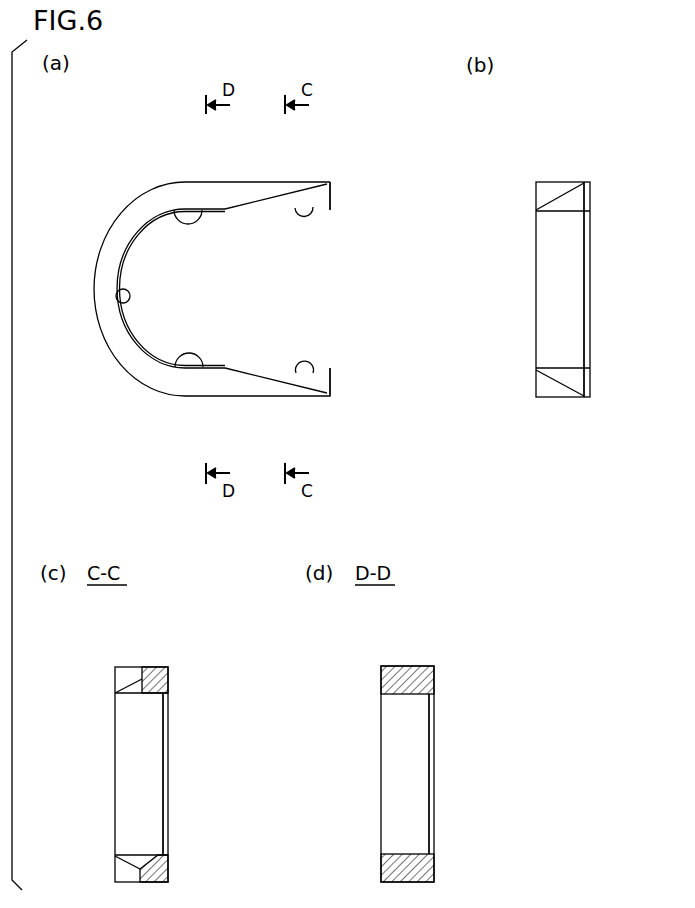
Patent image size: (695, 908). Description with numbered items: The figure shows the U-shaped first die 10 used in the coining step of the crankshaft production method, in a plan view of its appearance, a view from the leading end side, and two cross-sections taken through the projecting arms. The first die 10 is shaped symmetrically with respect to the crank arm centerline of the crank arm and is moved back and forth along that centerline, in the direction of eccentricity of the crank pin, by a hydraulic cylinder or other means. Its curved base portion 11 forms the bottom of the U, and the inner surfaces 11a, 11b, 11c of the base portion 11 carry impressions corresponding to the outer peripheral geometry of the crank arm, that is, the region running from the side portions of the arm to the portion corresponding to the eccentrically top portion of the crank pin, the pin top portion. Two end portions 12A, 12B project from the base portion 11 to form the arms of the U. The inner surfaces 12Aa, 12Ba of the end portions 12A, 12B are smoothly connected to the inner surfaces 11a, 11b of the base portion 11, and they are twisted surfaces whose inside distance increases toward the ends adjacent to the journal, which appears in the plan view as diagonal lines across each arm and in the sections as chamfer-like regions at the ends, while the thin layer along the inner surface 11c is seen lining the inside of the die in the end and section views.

The first die 10 is at (130, 194).
The base portion 11 is at (118, 218).
The inner surface 11a is at (173, 208).
The inner surface 11b is at (173, 369).
The inner surface 11c is at (118, 296).
The end portion 12A is at (298, 182).
The inner surface 12Aa is at (305, 214).
The end portion 12B is at (322, 396).
The inner surface 12Ba is at (297, 376).